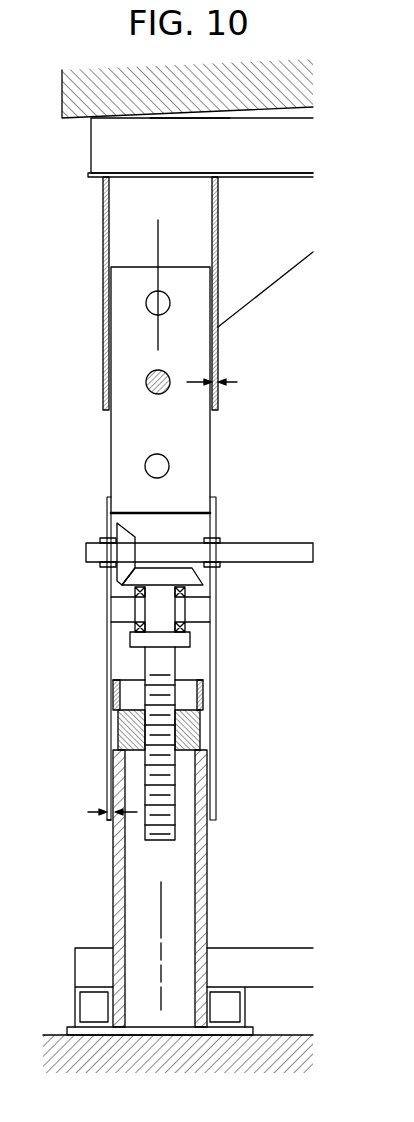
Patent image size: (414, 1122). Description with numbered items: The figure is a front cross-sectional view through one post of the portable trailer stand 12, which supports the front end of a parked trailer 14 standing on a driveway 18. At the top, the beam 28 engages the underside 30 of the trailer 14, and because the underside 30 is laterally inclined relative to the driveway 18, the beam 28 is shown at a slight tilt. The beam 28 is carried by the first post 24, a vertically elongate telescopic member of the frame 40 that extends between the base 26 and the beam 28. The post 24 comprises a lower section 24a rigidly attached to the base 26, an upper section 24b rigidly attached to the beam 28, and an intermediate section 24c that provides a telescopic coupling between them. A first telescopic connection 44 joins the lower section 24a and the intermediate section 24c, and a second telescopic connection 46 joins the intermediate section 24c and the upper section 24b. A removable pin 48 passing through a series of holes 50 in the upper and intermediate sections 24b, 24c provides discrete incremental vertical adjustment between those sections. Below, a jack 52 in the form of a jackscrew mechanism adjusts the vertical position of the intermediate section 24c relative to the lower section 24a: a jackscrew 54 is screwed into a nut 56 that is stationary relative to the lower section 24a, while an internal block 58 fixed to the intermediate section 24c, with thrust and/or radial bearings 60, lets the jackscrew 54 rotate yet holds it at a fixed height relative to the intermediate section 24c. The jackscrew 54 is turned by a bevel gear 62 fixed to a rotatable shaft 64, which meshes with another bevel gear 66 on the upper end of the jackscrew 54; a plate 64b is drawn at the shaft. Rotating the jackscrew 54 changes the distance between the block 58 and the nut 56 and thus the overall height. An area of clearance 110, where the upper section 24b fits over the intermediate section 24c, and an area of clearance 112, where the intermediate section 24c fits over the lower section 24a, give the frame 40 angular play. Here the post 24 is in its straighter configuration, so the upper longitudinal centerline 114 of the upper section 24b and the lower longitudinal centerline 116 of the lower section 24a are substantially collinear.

The portable trailer stand 12 is at (62, 197).
The trailer 14 is at (62, 97).
The driveway 18 is at (272, 1035).
The first post 24 is at (210, 425).
The lower section 24a is at (207, 865).
The upper section 24b is at (102, 340).
The intermediate section 24c is at (215, 662).
The base 26 is at (75, 1008).
The beam 28 is at (228, 117).
The underside 30 is at (192, 118).
The frame 40 is at (236, 235).
The first telescopic connection 44 is at (107, 833).
The second telescopic connection 46 is at (107, 420).
The removable pin 48 is at (147, 381).
The holes 50 is at (168, 296).
The jack 52 is at (168, 855).
The jackscrew 54 is at (175, 788).
The nut 56 is at (188, 732).
The internal block 58 is at (195, 608).
The bearings 60 is at (187, 593).
The bevel gear 62 is at (122, 575).
The rotatable shaft 64 is at (93, 538).
The drive plate 64b is at (252, 543).
The bevel gear 66 is at (162, 572).
The area of clearance 110 is at (227, 377).
The area of clearance 112 is at (100, 810).
The upper longitudinal centerline 114 is at (158, 248).
The lower longitudinal centerline 116 is at (160, 915).